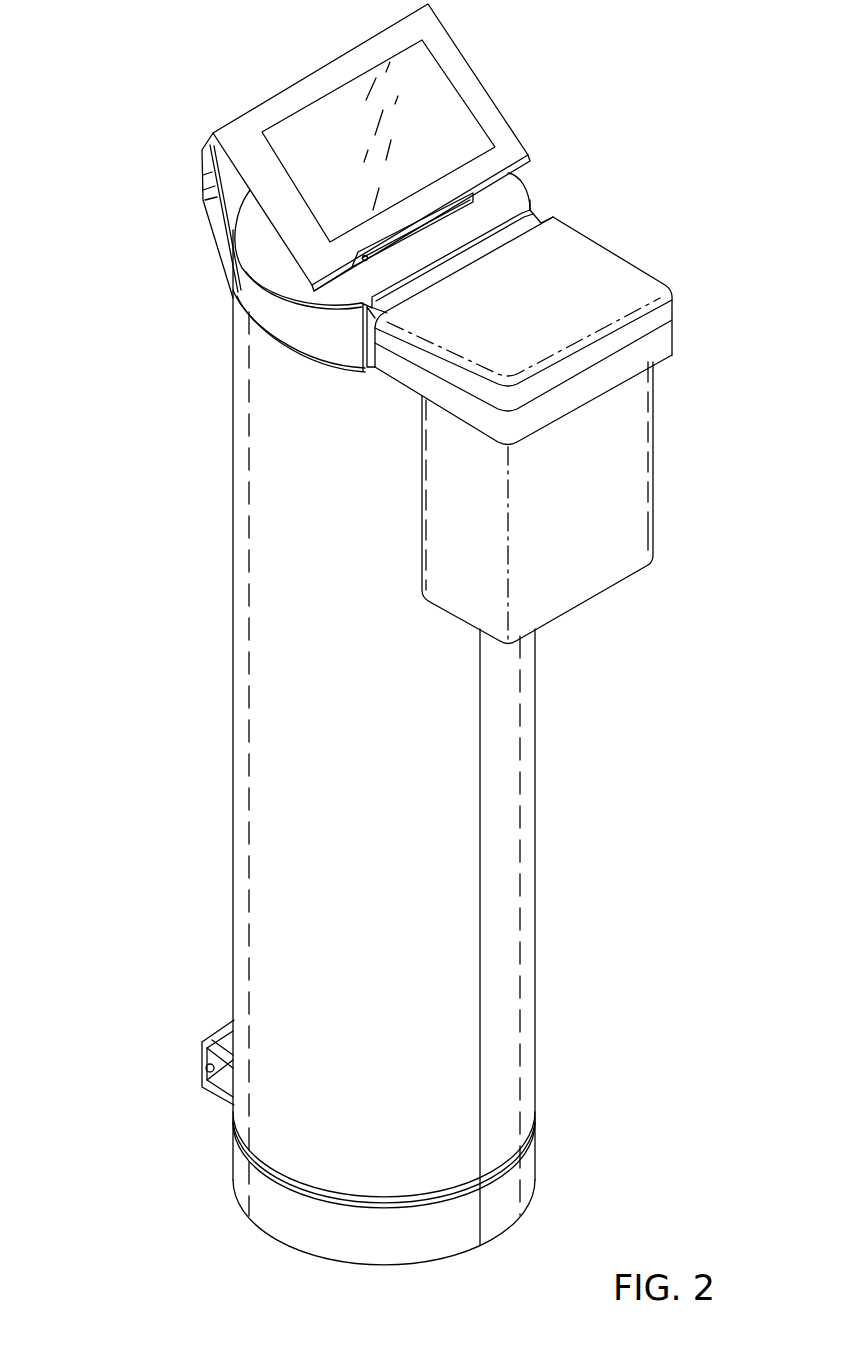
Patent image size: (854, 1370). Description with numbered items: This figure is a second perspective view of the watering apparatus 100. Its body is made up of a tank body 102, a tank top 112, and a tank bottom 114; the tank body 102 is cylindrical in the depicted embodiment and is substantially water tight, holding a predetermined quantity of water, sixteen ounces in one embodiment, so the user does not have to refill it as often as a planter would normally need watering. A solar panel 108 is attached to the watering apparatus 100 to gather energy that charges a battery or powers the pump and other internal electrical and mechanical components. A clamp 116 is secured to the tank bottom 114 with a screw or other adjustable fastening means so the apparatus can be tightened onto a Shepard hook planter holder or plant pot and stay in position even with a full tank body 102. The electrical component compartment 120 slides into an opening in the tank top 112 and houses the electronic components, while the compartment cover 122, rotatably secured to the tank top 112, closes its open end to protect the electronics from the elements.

The watering apparatus 100 is at (193, 630).
The tank body 102 is at (247, 755).
The solar panel 108 is at (438, 101).
The tank top 112 is at (265, 305).
The tank bottom 114 is at (243, 1175).
The clamp 116 is at (220, 1040).
The electrical component compartment 120 is at (633, 477).
The compartment cover 122 is at (590, 265).